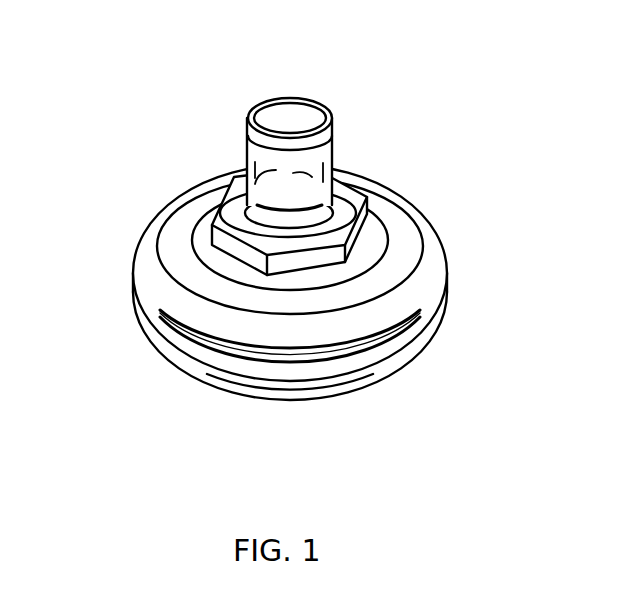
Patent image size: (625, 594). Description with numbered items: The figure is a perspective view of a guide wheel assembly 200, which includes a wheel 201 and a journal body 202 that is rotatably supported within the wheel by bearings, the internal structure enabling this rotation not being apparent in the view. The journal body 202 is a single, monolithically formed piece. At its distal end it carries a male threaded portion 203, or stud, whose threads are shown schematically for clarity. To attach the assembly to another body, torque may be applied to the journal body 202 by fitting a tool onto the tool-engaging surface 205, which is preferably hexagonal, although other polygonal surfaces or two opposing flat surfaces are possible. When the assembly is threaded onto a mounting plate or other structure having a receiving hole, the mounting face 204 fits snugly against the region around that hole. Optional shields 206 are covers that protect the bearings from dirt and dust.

The guide wheel assembly 200 is at (300, 219).
The wheel 201 is at (153, 342).
The journal body 202 is at (300, 115).
The male threaded portion 203 is at (256, 153).
The mounting face 204 is at (228, 193).
The tool-engaging surface 205 is at (320, 263).
The shields 206 is at (217, 263).